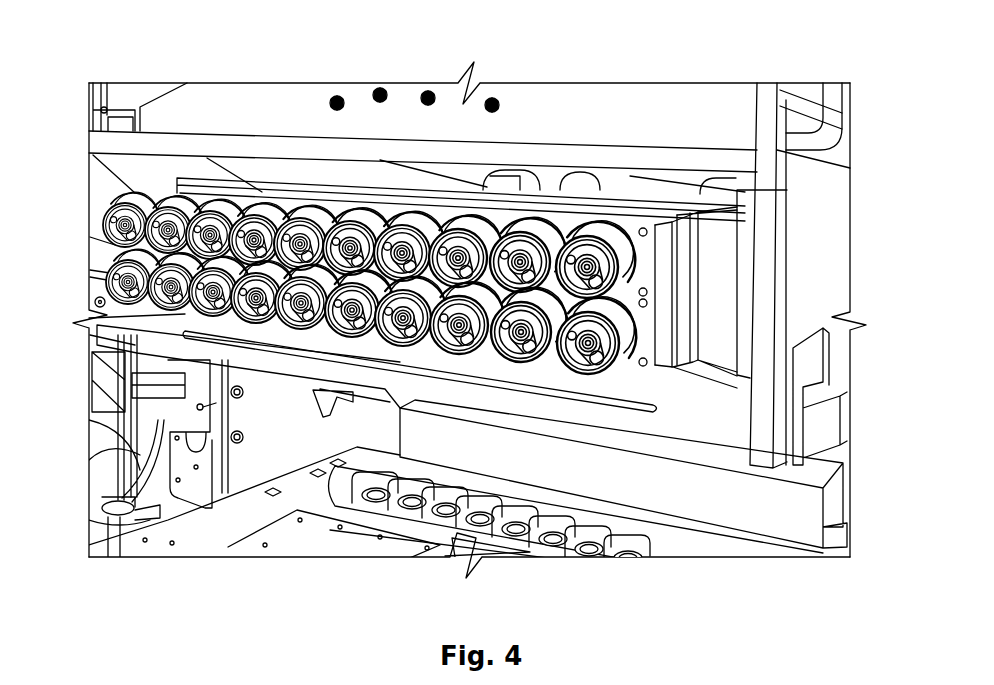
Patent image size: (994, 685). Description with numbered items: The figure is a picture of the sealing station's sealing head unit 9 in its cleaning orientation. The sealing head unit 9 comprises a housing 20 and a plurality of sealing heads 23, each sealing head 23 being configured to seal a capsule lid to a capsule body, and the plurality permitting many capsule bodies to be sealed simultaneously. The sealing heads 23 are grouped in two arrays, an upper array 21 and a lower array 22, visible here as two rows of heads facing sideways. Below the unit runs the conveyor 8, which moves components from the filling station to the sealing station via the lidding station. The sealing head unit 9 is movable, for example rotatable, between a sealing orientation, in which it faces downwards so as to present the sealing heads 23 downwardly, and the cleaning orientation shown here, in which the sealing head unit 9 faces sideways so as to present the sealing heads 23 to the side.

The conveyor 8 is at (370, 520).
The sealing head unit 9 is at (683, 116).
The housing 20 is at (767, 231).
The upper array 21 is at (641, 272).
The lower array 22 is at (627, 340).
The sealing head 23 is at (150, 208).